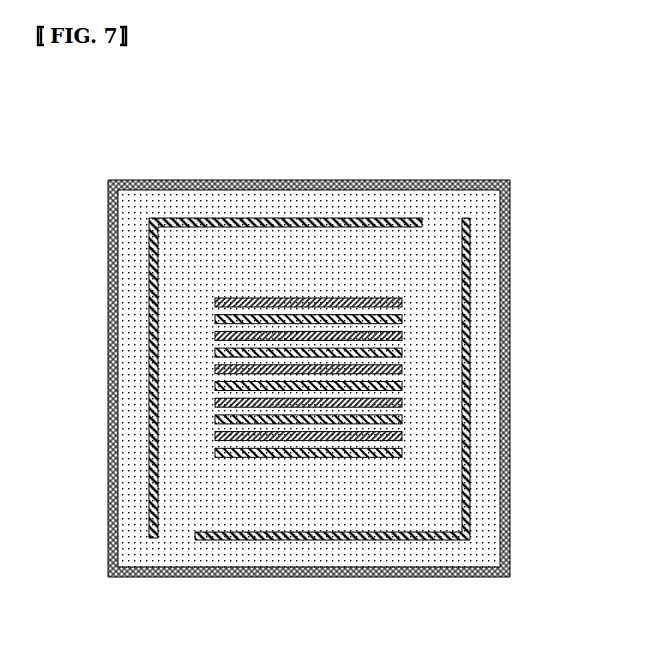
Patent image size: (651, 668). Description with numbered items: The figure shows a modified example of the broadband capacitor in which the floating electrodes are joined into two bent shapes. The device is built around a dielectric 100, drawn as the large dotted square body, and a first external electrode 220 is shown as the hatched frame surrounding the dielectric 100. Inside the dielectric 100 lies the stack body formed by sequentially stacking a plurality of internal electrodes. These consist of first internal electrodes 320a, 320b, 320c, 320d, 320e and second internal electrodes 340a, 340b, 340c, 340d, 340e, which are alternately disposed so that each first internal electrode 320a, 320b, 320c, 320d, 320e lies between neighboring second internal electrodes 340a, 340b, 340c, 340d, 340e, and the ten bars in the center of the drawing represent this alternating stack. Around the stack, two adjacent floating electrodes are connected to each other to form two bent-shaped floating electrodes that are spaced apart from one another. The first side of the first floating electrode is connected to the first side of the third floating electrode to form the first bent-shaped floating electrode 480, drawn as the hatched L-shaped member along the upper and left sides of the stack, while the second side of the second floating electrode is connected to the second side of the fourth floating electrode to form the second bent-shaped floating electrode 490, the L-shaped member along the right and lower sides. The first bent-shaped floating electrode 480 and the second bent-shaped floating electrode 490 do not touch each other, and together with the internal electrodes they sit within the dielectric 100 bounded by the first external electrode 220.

The dielectric 100 is at (296, 187).
The first external electrode 220 is at (453, 181).
The first bent-shaped floating electrode 480 is at (200, 217).
The second bent-shaped floating electrode 490 is at (395, 540).
The first internal electrode 320a is at (215, 319).
The first internal electrode 320b is at (215, 353).
The first internal electrode 320c is at (215, 386).
The first internal electrode 320d is at (215, 420).
The first internal electrode 320e is at (215, 453).
The second internal electrode 340a is at (402, 302).
The second internal electrode 340b is at (402, 336).
The second internal electrode 340c is at (402, 370).
The second internal electrode 340d is at (402, 403).
The second internal electrode 340e is at (402, 436).